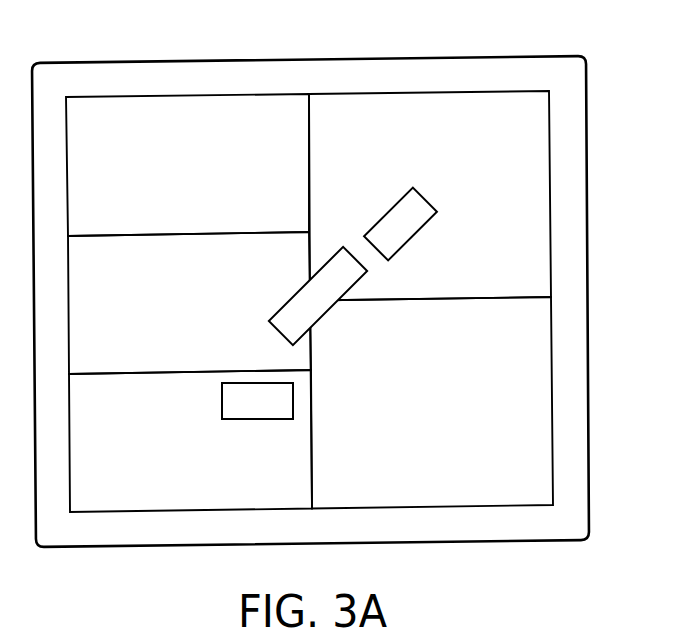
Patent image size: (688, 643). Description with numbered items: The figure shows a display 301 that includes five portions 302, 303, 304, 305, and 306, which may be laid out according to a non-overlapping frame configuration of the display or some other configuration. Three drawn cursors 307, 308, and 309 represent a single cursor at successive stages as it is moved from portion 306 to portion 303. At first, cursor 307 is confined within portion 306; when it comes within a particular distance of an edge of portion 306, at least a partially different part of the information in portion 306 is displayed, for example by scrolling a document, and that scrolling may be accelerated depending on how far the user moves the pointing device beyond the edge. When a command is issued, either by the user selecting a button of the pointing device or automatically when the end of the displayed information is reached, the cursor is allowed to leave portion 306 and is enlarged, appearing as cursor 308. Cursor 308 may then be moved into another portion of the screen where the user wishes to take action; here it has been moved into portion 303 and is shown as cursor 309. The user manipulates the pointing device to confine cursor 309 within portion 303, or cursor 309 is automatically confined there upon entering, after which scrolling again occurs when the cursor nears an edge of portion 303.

The display 301 is at (236, 61).
The portion 302 is at (208, 176).
The portion 303 is at (453, 180).
The portion 304 is at (455, 410).
The portion 305 is at (209, 322).
The portion 306 is at (212, 456).
The cursor 307 is at (257, 401).
The cursor 308 is at (318, 296).
The cursor 309 is at (400, 224).